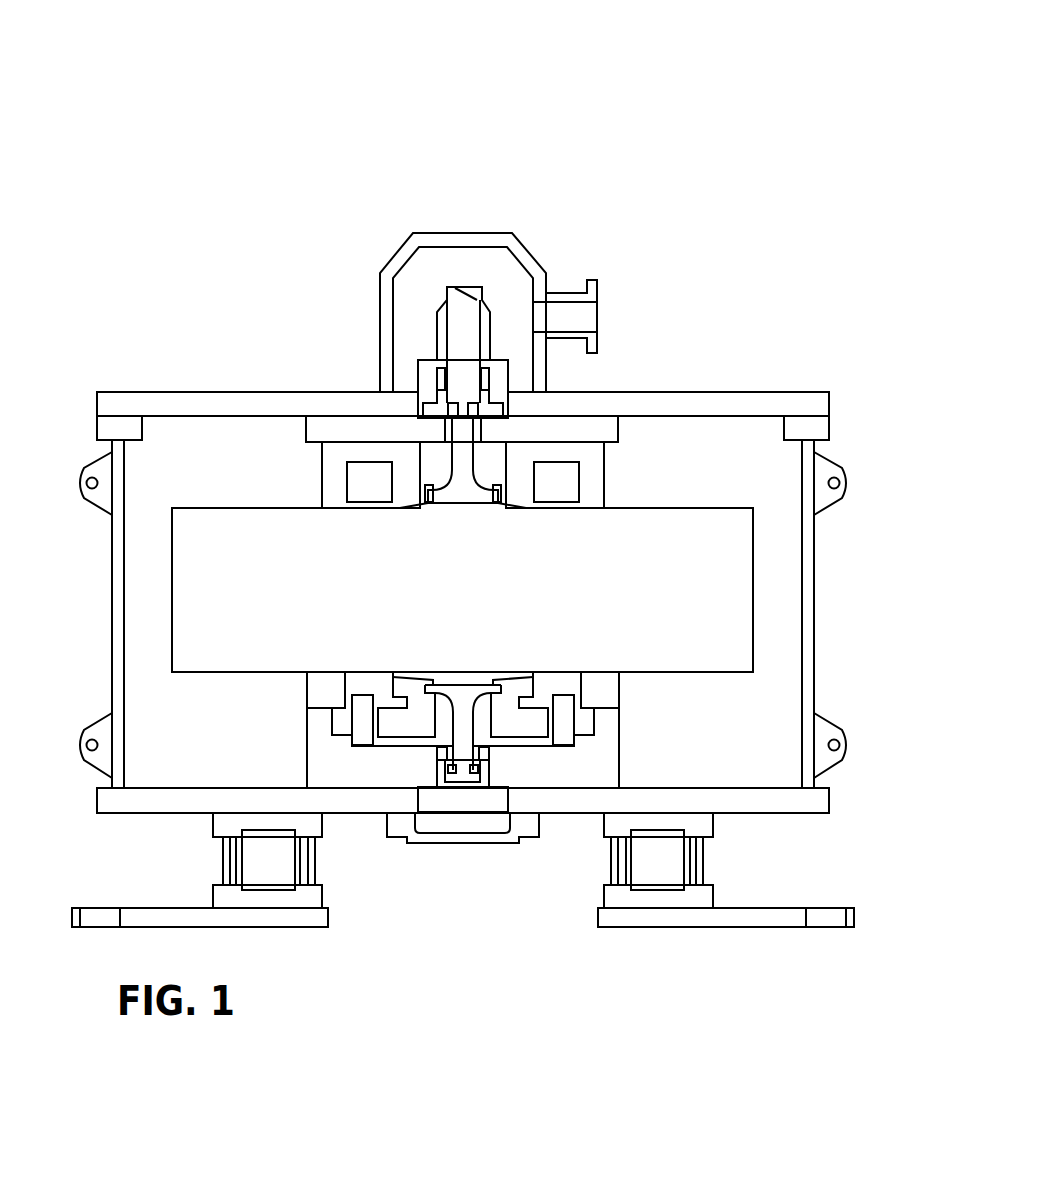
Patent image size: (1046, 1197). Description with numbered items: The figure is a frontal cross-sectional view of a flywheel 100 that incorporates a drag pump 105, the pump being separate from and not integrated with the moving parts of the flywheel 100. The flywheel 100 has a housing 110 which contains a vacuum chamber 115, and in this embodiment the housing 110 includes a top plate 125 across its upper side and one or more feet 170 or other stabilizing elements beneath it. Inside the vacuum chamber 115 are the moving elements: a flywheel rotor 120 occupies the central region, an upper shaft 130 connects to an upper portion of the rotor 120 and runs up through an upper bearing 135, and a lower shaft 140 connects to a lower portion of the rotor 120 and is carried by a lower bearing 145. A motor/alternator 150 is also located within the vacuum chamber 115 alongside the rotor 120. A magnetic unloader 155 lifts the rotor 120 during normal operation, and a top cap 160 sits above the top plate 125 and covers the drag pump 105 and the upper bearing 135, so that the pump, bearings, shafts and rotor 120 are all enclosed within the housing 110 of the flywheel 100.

The flywheel 100 is at (289, 168).
The drag pump 105 is at (438, 338).
The housing 110 is at (106, 615).
The vacuum chamber 115 is at (426, 626).
The flywheel rotor 120 is at (169, 532).
The top plate 125 is at (121, 388).
The upper shaft 130 is at (485, 467).
The upper bearing 135 is at (493, 377).
The lower shaft 140 is at (480, 740).
The lower bearing 145 is at (485, 768).
The motor/alternator 150 is at (326, 740).
The magnetic unloader 155 is at (581, 485).
The top cap 160 is at (545, 266).
The feet 170 is at (600, 895).